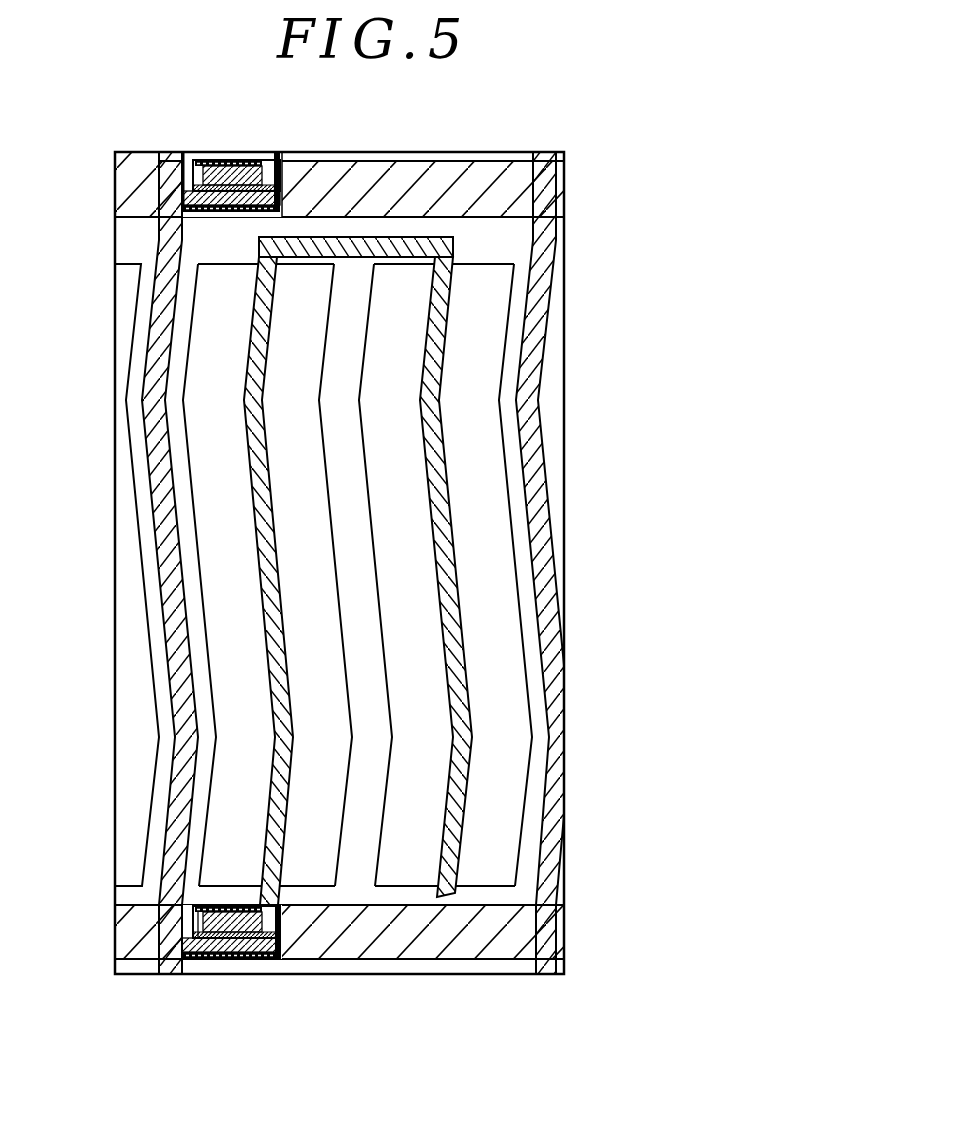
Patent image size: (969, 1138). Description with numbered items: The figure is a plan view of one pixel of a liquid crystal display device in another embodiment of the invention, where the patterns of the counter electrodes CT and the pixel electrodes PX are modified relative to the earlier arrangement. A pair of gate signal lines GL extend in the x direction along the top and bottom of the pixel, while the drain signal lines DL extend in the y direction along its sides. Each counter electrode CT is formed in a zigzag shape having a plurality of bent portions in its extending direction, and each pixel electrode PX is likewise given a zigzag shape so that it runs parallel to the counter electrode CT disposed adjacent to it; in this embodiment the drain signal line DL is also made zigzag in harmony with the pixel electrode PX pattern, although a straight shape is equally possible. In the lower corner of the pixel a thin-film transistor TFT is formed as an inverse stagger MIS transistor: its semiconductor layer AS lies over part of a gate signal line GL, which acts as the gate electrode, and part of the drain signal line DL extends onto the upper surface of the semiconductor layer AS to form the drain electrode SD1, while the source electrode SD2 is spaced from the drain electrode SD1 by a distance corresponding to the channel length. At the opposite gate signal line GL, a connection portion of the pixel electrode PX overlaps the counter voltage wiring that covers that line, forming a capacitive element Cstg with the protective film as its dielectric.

The capacitive element Cstg is at (412, 230).
The gate signal line GL is at (564, 191).
The counter electrode CT is at (323, 365).
The pixel electrode PX is at (442, 488).
The source electrode SD2 is at (213, 904).
The thin-film transistor TFT is at (288, 927).
The drain signal line DL is at (167, 975).
The semiconductor layer AS is at (212, 963).
The drain electrode SD1 is at (240, 957).